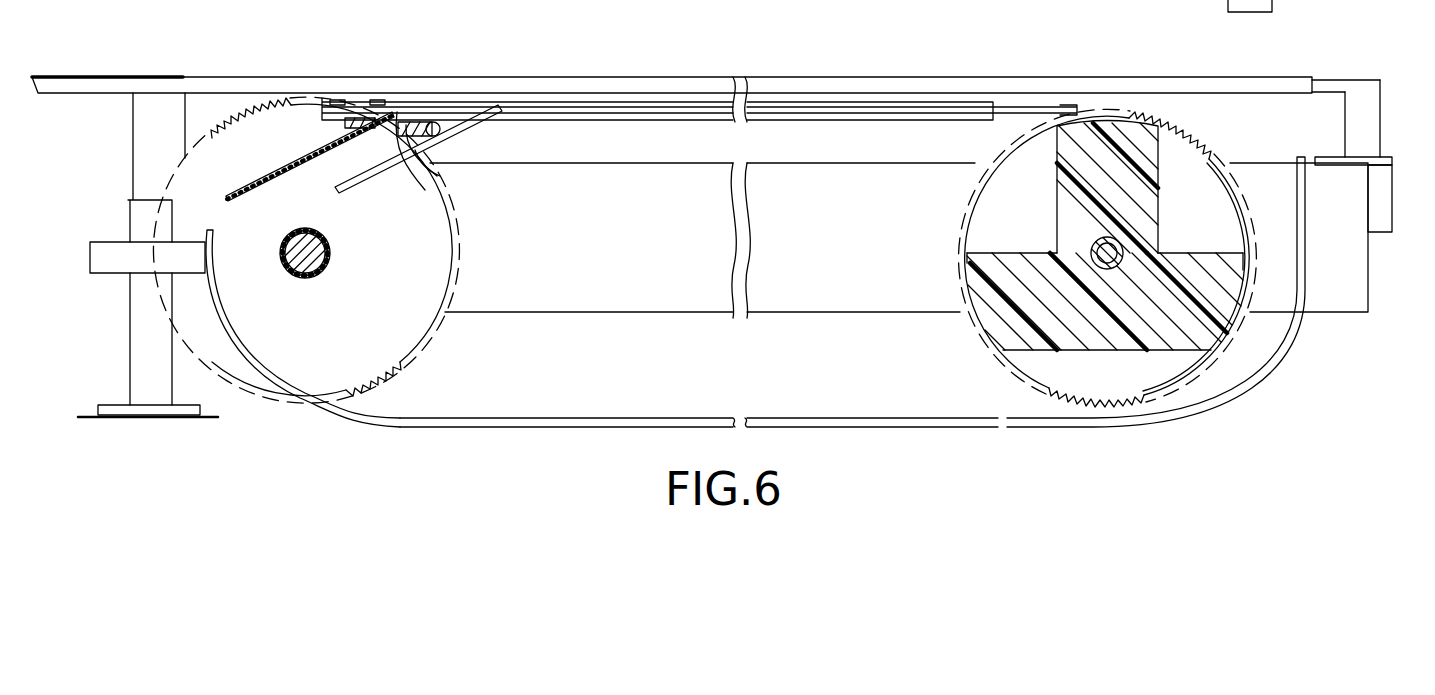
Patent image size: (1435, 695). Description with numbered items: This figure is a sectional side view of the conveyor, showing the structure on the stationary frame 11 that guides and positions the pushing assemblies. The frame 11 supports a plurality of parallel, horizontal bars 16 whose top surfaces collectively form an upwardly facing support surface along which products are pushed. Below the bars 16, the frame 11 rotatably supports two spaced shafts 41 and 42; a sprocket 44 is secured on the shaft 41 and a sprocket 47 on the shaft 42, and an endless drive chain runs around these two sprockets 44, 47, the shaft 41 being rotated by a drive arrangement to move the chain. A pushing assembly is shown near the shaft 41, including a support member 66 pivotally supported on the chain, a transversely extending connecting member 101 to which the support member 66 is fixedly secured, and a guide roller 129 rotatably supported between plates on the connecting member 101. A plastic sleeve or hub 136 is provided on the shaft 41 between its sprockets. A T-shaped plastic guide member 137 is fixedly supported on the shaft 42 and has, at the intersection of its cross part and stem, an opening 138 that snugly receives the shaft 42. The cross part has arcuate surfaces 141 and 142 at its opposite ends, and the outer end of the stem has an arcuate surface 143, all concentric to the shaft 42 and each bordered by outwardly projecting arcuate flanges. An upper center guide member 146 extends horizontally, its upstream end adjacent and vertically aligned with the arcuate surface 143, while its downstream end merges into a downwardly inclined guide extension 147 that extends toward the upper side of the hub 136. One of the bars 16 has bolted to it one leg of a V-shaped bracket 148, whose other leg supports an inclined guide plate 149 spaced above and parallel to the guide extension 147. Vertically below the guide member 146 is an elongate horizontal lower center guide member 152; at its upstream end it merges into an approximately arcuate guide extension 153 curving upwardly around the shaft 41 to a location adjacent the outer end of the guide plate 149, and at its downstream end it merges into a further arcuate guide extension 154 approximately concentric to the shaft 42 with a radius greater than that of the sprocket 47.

The stationary frame 11 is at (1386, 123).
The bars 16 is at (1272, 50).
The shaft 41 is at (320, 258).
The shaft 42 is at (1128, 247).
The sprocket 44 is at (377, 363).
The sprocket 47 is at (1073, 375).
The support member 66 is at (428, 167).
The connecting member 101 is at (400, 113).
The guide roller 129 is at (445, 127).
The plastic sleeve or hub 136 is at (327, 238).
The T-shaped plastic guide member 137 is at (1017, 275).
The opening 138 is at (1092, 247).
The arcuate surface 141 is at (968, 282).
The arcuate surface 142 is at (1223, 263).
The arcuate surface 143 is at (1112, 120).
The upper center guide member 146 is at (1020, 110).
The inclined guide extension 147 is at (352, 187).
The V-shaped bracket 148 is at (395, 108).
The inclined guide plate 149 is at (302, 157).
The lower center guide member 152 is at (575, 418).
The arcuate guide extension 153 is at (240, 347).
The arcuate guide extension 154 is at (1302, 292).